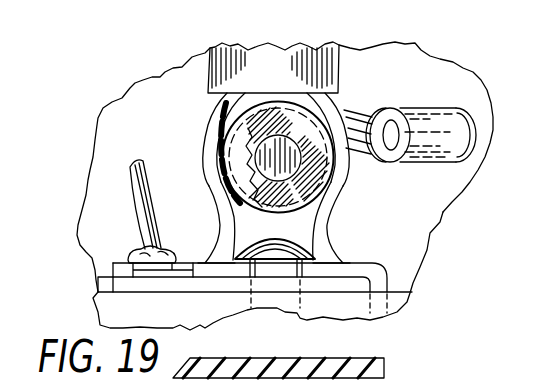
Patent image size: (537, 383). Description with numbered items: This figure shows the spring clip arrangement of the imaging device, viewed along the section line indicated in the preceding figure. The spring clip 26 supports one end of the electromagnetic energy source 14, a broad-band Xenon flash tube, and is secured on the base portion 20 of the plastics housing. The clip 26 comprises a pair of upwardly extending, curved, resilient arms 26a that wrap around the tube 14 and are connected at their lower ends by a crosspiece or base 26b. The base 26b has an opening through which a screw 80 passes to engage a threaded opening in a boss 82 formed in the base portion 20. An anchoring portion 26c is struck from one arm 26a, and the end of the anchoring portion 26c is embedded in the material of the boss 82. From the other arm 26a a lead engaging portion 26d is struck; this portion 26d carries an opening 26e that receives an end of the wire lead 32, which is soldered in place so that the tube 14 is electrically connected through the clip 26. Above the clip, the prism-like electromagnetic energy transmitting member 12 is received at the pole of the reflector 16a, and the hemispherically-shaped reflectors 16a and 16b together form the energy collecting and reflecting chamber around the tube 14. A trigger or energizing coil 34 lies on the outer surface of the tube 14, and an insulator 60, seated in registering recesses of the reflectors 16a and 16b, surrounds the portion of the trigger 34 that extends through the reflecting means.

The electromagnetic energy transmitting member 12 is at (287, 57).
The electromagnetic energy source 14 is at (235, 118).
The hemispherically-shaped reflector 16a is at (421, 71).
The hemispherically-shaped reflector 16b is at (445, 213).
The base portion 20 is at (386, 368).
The spring clip 26 is at (225, 203).
The curved resilient arm 26a is at (208, 133).
The crosspiece or base 26b is at (320, 265).
The anchoring portion 26c is at (371, 262).
The lead engaging portion 26d is at (210, 219).
The opening 26e is at (145, 269).
The wire lead 32 is at (133, 199).
The trigger or energizing coil 34 is at (345, 100).
The insulator 60 is at (410, 115).
The screw 80 is at (284, 250).
The boss 82 is at (100, 312).